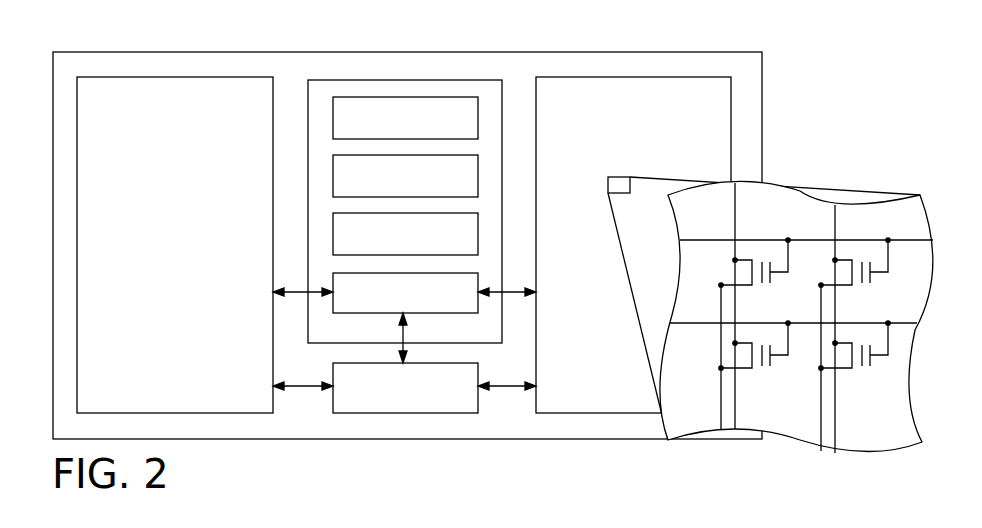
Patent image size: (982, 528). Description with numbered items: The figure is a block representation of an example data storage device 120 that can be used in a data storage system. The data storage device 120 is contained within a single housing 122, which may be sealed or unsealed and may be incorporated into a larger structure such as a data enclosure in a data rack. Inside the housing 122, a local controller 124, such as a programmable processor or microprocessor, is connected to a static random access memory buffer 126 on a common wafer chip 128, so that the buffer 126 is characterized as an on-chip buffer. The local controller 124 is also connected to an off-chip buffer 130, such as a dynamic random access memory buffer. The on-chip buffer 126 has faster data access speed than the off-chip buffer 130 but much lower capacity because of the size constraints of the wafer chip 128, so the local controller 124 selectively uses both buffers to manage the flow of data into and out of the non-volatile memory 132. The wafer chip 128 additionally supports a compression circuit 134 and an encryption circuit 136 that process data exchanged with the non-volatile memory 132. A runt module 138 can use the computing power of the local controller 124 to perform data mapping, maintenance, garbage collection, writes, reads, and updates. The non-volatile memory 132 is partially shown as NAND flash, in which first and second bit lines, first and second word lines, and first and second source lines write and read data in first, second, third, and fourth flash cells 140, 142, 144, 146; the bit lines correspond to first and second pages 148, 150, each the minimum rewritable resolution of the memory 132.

The data storage device 120 is at (96, 30).
The housing 122 is at (757, 51).
The local controller 124 is at (387, 128).
The SRAM buffer 126 is at (387, 304).
The wafer chip 128 is at (459, 339).
The off-chip buffer 130 is at (387, 398).
The non-volatile memory 132 is at (571, 400).
The compression circuit 134 is at (387, 186).
The encryption circuit 136 is at (387, 244).
The runt module 138 is at (158, 158).
The first flash cell 140 is at (725, 268).
The second flash cell 142 is at (815, 280).
The third flash cell 144 is at (725, 347).
The fourth flash cell 146 is at (880, 368).
The first page of memory 148 is at (747, 398).
The second page of memory 150 is at (850, 406).